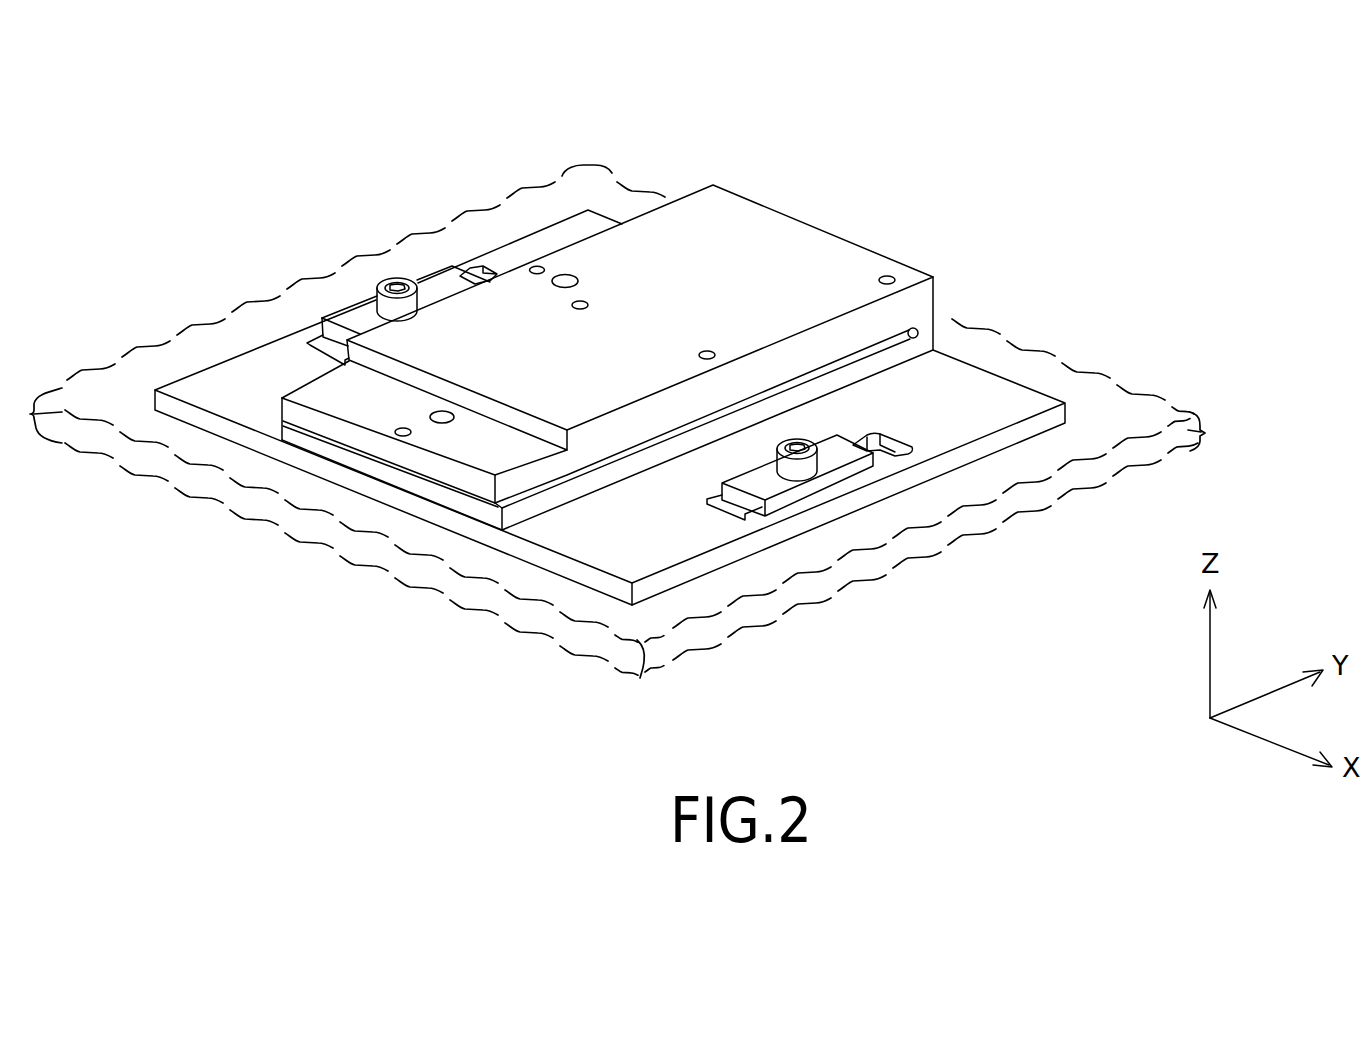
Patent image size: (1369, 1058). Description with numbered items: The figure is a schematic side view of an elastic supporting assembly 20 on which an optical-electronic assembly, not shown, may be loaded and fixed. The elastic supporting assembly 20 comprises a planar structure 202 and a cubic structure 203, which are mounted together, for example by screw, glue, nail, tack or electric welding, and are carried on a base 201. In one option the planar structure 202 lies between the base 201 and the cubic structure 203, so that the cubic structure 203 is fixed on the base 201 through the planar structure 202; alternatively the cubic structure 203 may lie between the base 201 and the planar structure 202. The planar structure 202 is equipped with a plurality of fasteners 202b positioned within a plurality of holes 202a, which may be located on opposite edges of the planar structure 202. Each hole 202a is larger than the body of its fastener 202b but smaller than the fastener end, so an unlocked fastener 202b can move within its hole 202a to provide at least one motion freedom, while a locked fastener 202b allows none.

The elastic supporting assembly 20 is at (290, 117).
The base 201 is at (673, 598).
The planar structure 202 is at (1068, 402).
The hole 202a is at (905, 447).
The fastener 202b is at (762, 478).
The cubic structure 203 is at (935, 351).